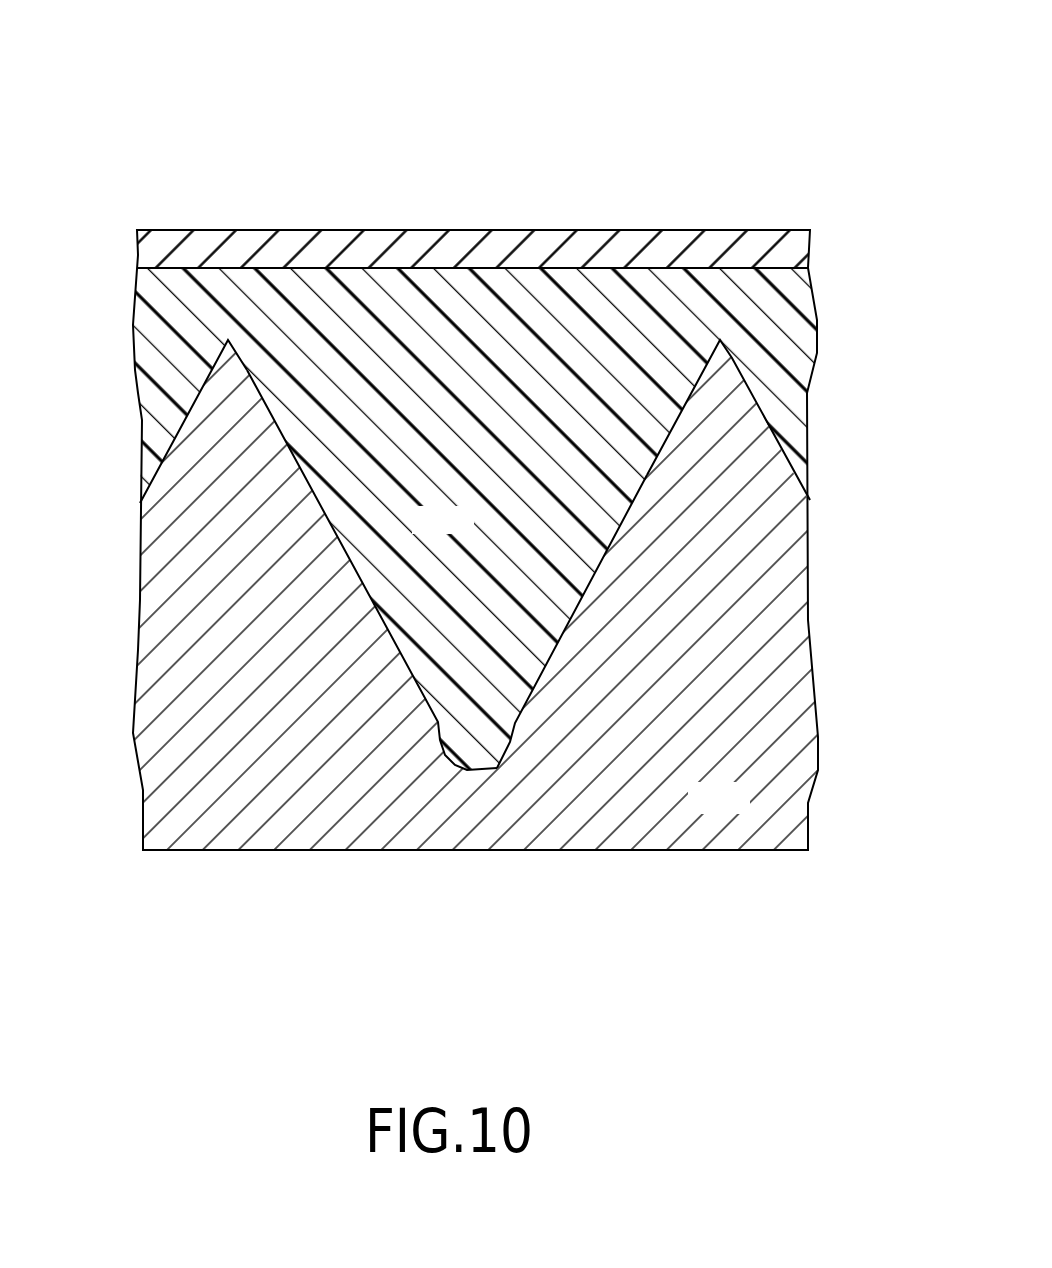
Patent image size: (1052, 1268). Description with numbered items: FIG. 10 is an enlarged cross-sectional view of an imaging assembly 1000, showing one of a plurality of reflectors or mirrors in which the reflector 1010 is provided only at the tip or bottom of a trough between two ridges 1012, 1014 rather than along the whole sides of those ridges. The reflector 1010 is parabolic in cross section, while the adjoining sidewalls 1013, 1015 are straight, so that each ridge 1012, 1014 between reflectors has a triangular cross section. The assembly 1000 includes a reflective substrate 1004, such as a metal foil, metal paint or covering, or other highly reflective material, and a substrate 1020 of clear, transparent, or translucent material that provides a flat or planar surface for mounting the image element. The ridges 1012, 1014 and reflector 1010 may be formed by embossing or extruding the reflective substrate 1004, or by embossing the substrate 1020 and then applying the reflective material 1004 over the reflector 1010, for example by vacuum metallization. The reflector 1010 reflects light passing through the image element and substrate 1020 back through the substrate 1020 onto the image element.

The imaging assembly 1000 is at (86, 140).
The reflector 1010 is at (800, 243).
The substrate 1020 is at (800, 345).
The reflective substrate 1004 is at (748, 812).
The ridge 1012 is at (220, 395).
The sidewall 1013 is at (357, 572).
The sidewall 1015 is at (643, 483).
The ridge 1014 is at (747, 430).